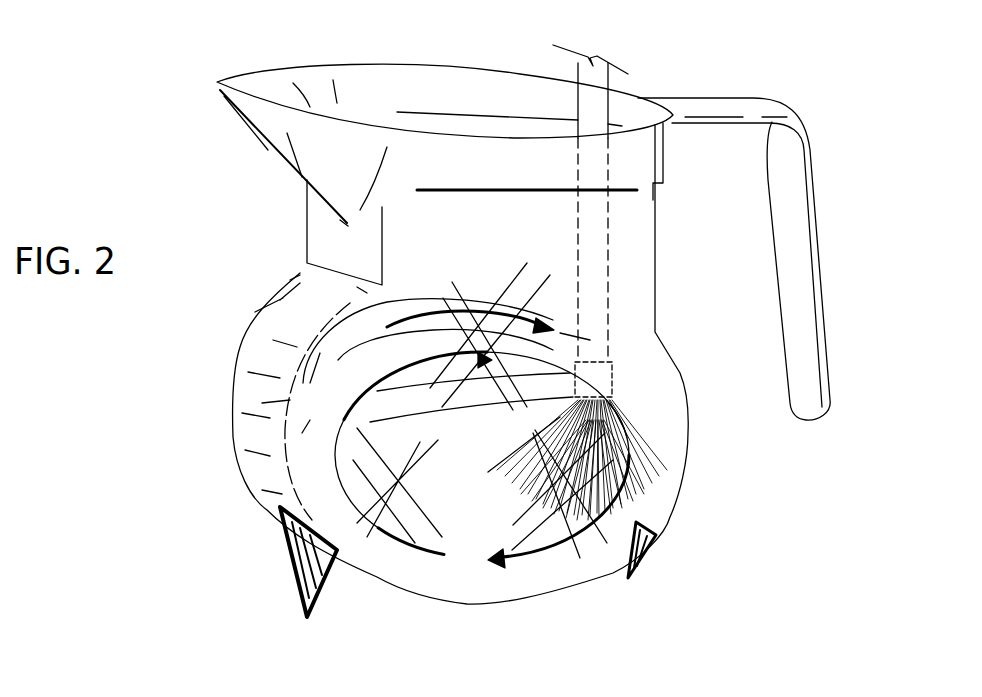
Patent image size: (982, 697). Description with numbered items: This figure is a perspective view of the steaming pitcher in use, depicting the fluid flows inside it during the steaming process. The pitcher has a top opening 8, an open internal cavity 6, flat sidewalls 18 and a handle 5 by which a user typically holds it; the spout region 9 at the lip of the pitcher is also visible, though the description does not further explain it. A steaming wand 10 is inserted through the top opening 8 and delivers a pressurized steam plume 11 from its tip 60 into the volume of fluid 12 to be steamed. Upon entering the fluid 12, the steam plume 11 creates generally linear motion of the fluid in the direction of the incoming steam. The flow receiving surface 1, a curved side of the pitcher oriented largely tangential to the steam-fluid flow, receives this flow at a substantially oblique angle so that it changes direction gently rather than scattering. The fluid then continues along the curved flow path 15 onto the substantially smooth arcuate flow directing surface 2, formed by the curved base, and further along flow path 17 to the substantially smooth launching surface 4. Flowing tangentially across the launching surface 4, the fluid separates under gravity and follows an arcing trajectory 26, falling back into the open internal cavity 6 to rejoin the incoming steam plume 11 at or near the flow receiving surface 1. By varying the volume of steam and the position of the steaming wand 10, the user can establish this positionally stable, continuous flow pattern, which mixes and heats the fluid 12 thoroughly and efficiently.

The flow receiving surface 1 is at (690, 428).
The flow directing surface 2 is at (565, 590).
The launching surface 4 is at (347, 285).
The handle 5 is at (788, 135).
The open internal cavity 6 is at (515, 358).
The top opening 8 is at (503, 128).
The spout 9 is at (297, 127).
The steaming wand 10 is at (590, 113).
The steam plume 11 is at (592, 430).
The fluid 12 is at (452, 493).
The curved flow path 15 is at (617, 505).
The flow path 17 is at (370, 385).
The flat sidewalls 18 is at (445, 438).
The arcing trajectory 26 is at (423, 310).
The tip 60 is at (603, 377).